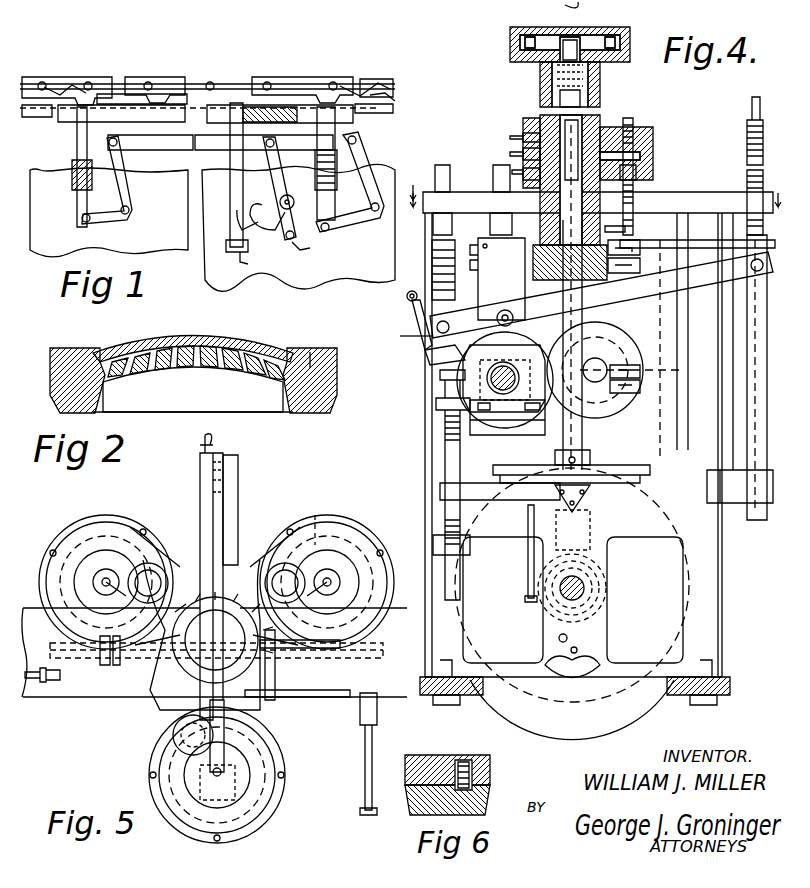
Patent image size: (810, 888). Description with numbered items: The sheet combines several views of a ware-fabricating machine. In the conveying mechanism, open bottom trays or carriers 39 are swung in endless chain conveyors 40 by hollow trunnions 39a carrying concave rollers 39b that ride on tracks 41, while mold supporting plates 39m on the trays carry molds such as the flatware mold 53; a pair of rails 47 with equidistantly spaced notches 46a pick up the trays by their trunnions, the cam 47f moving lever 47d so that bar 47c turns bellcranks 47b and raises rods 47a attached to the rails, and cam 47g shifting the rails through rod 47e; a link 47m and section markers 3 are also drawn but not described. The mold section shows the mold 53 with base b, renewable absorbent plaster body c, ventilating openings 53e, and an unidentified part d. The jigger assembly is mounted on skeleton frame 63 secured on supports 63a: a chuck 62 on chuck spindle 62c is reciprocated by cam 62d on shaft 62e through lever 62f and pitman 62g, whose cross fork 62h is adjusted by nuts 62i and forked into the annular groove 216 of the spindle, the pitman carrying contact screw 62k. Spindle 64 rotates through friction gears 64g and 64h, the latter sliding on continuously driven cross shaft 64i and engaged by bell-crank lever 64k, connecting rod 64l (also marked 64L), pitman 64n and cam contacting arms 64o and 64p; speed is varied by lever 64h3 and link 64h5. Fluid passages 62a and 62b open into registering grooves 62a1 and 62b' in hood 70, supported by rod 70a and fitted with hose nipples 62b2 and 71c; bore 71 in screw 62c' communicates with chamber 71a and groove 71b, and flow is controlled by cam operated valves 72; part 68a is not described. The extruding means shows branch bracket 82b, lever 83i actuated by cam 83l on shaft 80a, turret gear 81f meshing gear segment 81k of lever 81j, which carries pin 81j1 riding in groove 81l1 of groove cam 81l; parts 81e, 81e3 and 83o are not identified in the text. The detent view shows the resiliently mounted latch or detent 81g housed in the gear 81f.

In FIG. 1, the trays or carriers 39 is at (30, 80).
In FIG. 1, the endless flexible chain conveyors 40 is at (160, 80).
In FIG. 1, the rollers 39b is at (268, 79).
In FIG. 1, the mold supporting plates 39m is at (350, 79).
In FIG. 1, the flatware mold 53 is at (392, 80).
In FIG. 2, the flatware mold 53 is at (300, 405).
In FIG. 1, the hollow projecting trunnions 39a is at (388, 92).
In FIG. 1, the tracks 41 is at (383, 110).
In FIG. 1, the notches 46a is at (110, 104).
In FIG. 1, the rails 47 is at (77, 112).
In FIG. 1, the rods 47a is at (72, 148).
In FIG. 1, the bellcranks 47b is at (125, 190).
In FIG. 1, the bar 47c is at (150, 148).
In FIG. 1, the lever 47d is at (296, 198).
In FIG. 1, the rod 47e is at (236, 190).
In FIG. 1, the cam 47f is at (258, 232).
In FIG. 1, the cam 47g is at (272, 192).
In FIG. 1, the link 47m is at (291, 185).
In FIG. 1, the section line 3 is at (412, 201).
In FIG. 4, the section line 3 is at (595, 208).
In FIG. 2, the ventilating openings 53e is at (230, 368).
In FIG. 2, the renewable absorbent plaster body c is at (220, 340).
In FIG. 2, the pin d is at (315, 352).
In FIG. 2, the base b is at (102, 410).
In FIG. 5, the wheel housing 81e is at (375, 545).
In FIG. 5, the centerline 81e3 is at (313, 520).
In FIG. 5, the branch bracket 82b is at (200, 503).
In FIG. 5, the lever 83i is at (240, 512).
In FIG. 5, the gear 81f is at (233, 600).
In FIG. 6, the gear 81f is at (415, 815).
In FIG. 5, the groove cam 81l is at (150, 690).
In FIG. 5, the groove 81l1 is at (150, 672).
In FIG. 5, the shaft 80a is at (345, 655).
In FIG. 5, the cam 83l is at (278, 672).
In FIG. 5, the lever 81j is at (312, 698).
In FIG. 5, the pin 81j1 is at (160, 722).
In FIG. 5, the roller 83o is at (175, 740).
In FIG. 6, the gear segment 81k is at (445, 756).
In FIG. 6, the latch or detent 81g is at (472, 778).
In FIG. 4, the skeleton frame 63 is at (722, 612).
In FIG. 4, the supports 63a is at (730, 685).
In FIG. 4, the rod 70a is at (638, 230).
In FIG. 4, the annular groove 216 is at (615, 232).
In FIG. 4, the chuck 62 is at (630, 42).
In FIG. 4, the screw 62c' is at (588, 34).
In FIG. 4, the passage 62a is at (540, 78).
In FIG. 4, the passage 62b is at (615, 84).
In FIG. 4, the chuck spindle 62c is at (574, 85).
In FIG. 4, the bore 71 is at (575, 107).
In FIG. 4, the chamber 71a is at (573, 150).
In FIG. 4, the annular registering groove 62a1 is at (620, 125).
In FIG. 4, the hood 70 is at (645, 145).
In FIG. 4, the annular registering groove 62b' is at (643, 158).
In FIG. 4, the groove 71b is at (636, 175).
In FIG. 4, the pin 68a is at (510, 137).
In FIG. 4, the hose nipple 62b2 is at (510, 154).
In FIG. 4, the hose nipple 71c is at (512, 172).
In FIG. 4, the contact screw 62k is at (752, 112).
In FIG. 4, the pitman 62g is at (747, 355).
In FIG. 4, the cross fork 62h is at (716, 243).
In FIG. 4, the nuts 62i is at (762, 250).
In FIG. 4, the lever 62f is at (503, 310).
In FIG. 4, the cam operated valves 72 is at (497, 279).
In FIG. 4, the cam contacting arm 64p is at (432, 362).
In FIG. 4, the cam contacting arm 64o is at (440, 400).
In FIG. 4, the cam 62d is at (533, 358).
In FIG. 4, the shaft 62e is at (520, 18).
In FIG. 4, the lug 64L is at (550, 9).
In FIG. 4, the spindle 64 is at (595, 432).
In FIG. 4, the friction gear 64g is at (630, 468).
In FIG. 4, the connecting rod 64l is at (495, 500).
In FIG. 4, the bell-crank lever 64k is at (592, 502).
In FIG. 4, the friction gear 64h is at (605, 698).
In FIG. 4, the cross shaft 64i is at (583, 600).
In FIG. 4, the pitman 64n is at (458, 556).
In FIG. 4, the lever 64h3 is at (528, 540).
In FIG. 4, the link 64h5 is at (527, 597).